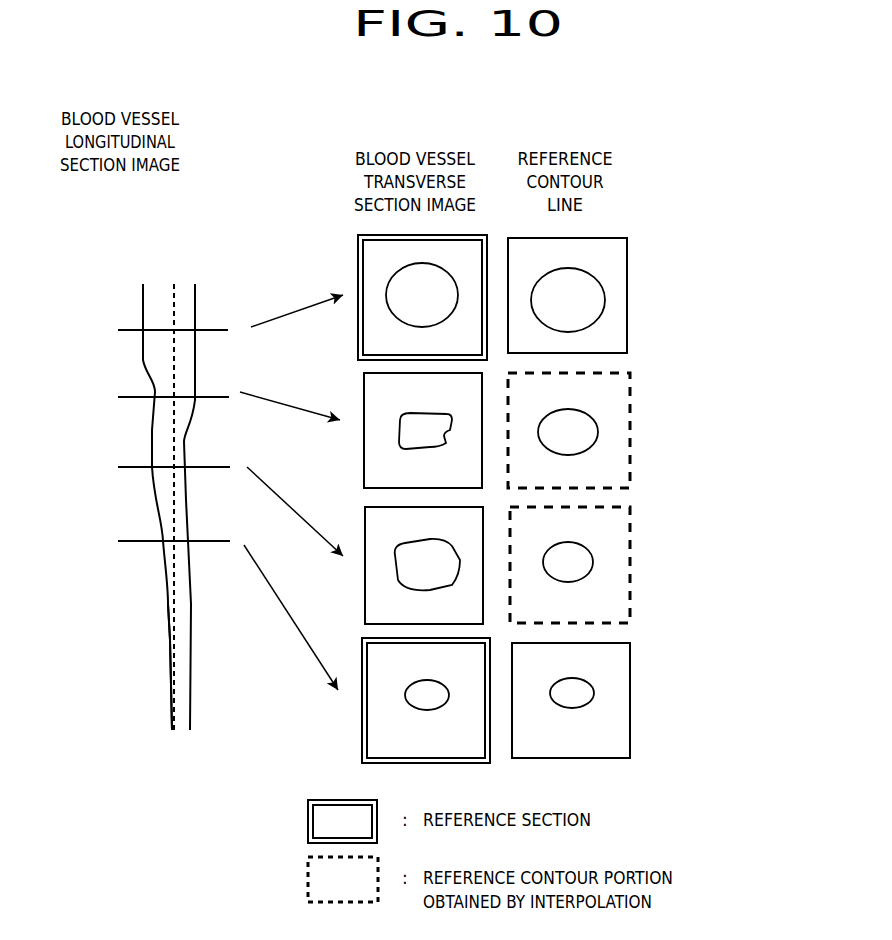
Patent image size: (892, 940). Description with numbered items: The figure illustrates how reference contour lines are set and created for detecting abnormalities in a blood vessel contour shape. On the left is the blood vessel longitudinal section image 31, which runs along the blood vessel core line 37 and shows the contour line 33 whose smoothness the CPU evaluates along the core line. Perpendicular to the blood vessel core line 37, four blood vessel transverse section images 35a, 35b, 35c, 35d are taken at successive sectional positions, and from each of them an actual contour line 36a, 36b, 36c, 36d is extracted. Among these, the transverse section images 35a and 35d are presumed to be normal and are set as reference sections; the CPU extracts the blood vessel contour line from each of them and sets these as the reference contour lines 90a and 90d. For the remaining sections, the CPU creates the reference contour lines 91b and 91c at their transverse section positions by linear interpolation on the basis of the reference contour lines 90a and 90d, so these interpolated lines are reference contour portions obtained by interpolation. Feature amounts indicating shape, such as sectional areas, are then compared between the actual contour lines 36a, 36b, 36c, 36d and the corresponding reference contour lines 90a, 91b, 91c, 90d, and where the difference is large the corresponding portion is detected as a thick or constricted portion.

The blood vessel longitudinal section image 31 is at (168, 270).
The contour line 33 is at (142, 306).
The blood vessel core line 37 is at (170, 641).
The blood vessel transverse section image 35a is at (358, 257).
The contour line 36a is at (393, 312).
The blood vessel transverse section image 35b is at (364, 393).
The contour line 36b is at (399, 440).
The blood vessel transverse section image 35c is at (365, 522).
The contour line 36c is at (395, 572).
The blood vessel transverse section image 35d is at (362, 676).
The contour line 36d is at (408, 705).
The reference contour line 90a is at (605, 293).
The reference contour line 91b is at (598, 425).
The reference contour line 91c is at (593, 560).
The reference contour line 90d is at (594, 690).